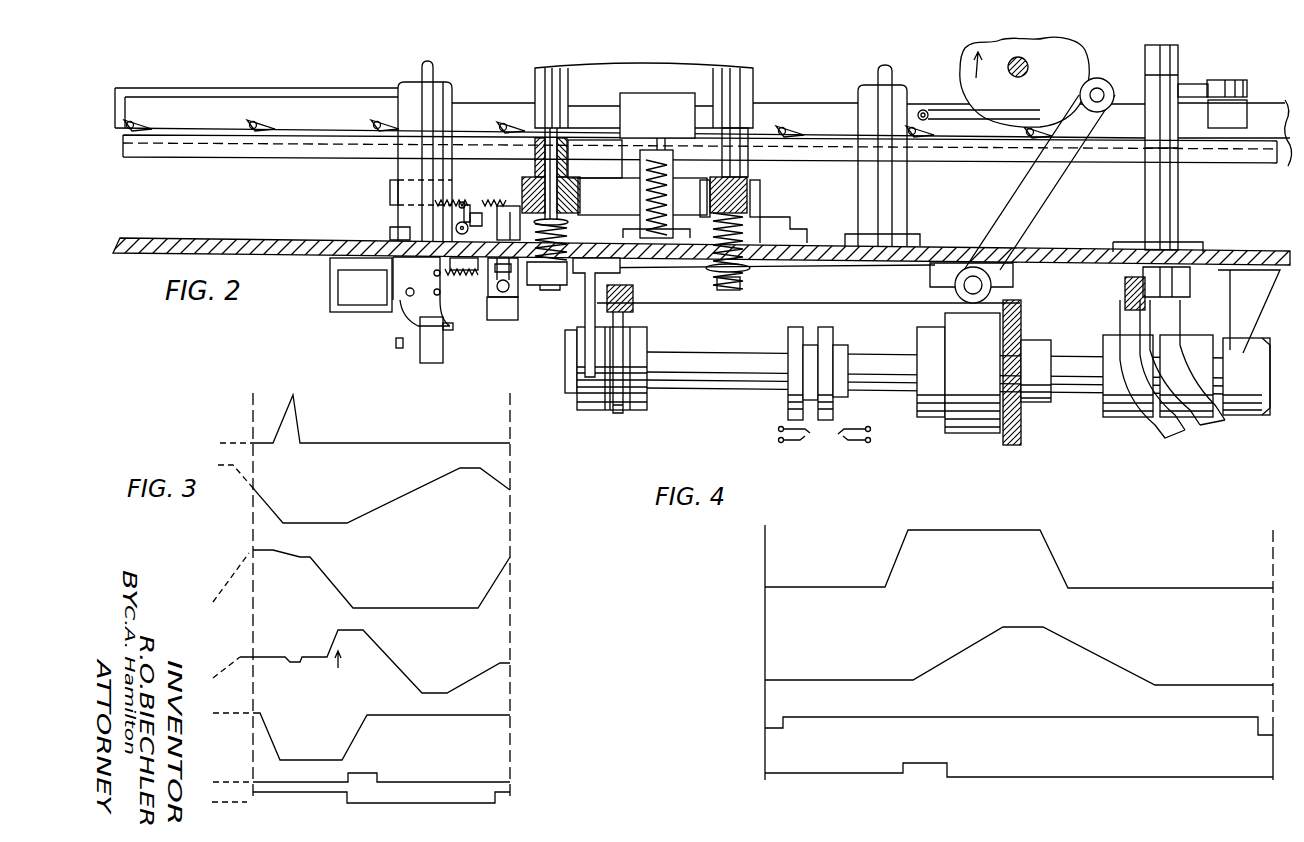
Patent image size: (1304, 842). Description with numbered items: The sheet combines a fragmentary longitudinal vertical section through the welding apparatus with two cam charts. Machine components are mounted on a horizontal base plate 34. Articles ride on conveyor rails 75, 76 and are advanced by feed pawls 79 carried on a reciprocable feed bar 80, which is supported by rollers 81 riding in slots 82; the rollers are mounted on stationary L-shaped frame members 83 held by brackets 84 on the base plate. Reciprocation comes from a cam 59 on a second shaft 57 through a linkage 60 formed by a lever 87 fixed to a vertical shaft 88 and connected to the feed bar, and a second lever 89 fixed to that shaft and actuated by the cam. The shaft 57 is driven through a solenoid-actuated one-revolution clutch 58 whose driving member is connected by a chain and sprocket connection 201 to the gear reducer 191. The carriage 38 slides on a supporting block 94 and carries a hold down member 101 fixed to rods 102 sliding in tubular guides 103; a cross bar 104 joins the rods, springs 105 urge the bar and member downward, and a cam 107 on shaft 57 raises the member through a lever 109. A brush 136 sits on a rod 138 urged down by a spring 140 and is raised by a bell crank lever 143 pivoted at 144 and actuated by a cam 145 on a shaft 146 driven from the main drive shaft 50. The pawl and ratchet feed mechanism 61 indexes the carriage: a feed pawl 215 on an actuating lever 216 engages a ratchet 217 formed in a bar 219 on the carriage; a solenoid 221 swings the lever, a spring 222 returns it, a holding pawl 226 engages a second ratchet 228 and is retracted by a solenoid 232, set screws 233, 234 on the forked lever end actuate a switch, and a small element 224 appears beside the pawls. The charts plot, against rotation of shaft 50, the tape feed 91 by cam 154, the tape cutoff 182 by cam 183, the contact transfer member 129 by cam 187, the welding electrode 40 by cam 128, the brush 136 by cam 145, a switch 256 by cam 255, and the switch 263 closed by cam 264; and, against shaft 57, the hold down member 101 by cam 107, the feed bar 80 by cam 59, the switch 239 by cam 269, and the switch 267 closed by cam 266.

In FIG. 2, the base plate 34 is at (918, 250).
In FIG. 2, the carriage 38 is at (771, 203).
In FIG. 3, the welding electrode 40 is at (448, 662).
In FIG. 3, the main drive shaft 50 is at (377, 817).
In FIG. 2, the second shaft 57 is at (726, 388).
In FIG. 4, the second shaft 57 is at (1015, 796).
In FIG. 2, the one-revolution clutch 58 is at (965, 420).
In FIG. 2, the cam 59 is at (1165, 442).
In FIG. 4, the cam 59 is at (1019, 649).
In FIG. 2, the linkage 60 is at (1236, 89).
In FIG. 2, the pawl and ratchet feed mechanism 61 is at (519, 324).
In FIG. 2, the rail 75 is at (163, 137).
In FIG. 2, the rail 76 is at (248, 146).
In FIG. 2, the feed pawls 79 is at (138, 124).
In FIG. 2, the feed bar 80 is at (335, 107).
In FIG. 4, the feed bar 80 is at (1018, 668).
In FIG. 2, the rollers 81 is at (925, 109).
In FIG. 2, the slots 82 is at (984, 106).
In FIG. 2, the L-shaped frame members 83 is at (172, 80).
In FIG. 2, the brackets 84 is at (447, 96).
In FIG. 2, the lever 87 is at (1195, 85).
In FIG. 2, the vertical shaft 88 is at (1178, 213).
In FIG. 2, the second lever 89 is at (1126, 294).
In FIG. 3, the tape feed 91 is at (354, 420).
In FIG. 2, the supporting block 94 is at (800, 236).
In FIG. 2, the hold down member 101 is at (596, 317).
In FIG. 4, the hold down member 101 is at (970, 566).
In FIG. 2, the rods 102 is at (765, 112).
In FIG. 2, the tubular guides 103 is at (535, 165).
In FIG. 2, the cross bar 104 is at (556, 286).
In FIG. 2, the springs 105 is at (570, 224).
In FIG. 2, the cam 107 is at (627, 411).
In FIG. 4, the cam 107 is at (1019, 547).
In FIG. 2, the lever 109 is at (640, 306).
In FIG. 3, the welding cam 128 is at (361, 661).
In FIG. 3, the contact transfer member 129 is at (405, 586).
In FIG. 3, the brush 136 is at (427, 730).
In FIG. 2, the rod 138 is at (650, 142).
In FIG. 2, the spring 140 is at (652, 204).
In FIG. 2, the bell crank lever 143 is at (1045, 190).
In FIG. 2, the pivot 144 is at (995, 289).
In FIG. 2, the cam 145 is at (1090, 60).
In FIG. 3, the cam 145 is at (361, 730).
In FIG. 2, the shaft 146 is at (1030, 70).
In FIG. 3, the tape feed cam 154 is at (365, 427).
In FIG. 2, the tape cutoff 182 is at (551, 176).
In FIG. 3, the tape cutoff 182 is at (430, 528).
In FIG. 3, the tape cutoff cam 183 is at (364, 494).
In FIG. 3, the contact transfer cam 187 is at (361, 579).
In FIG. 2, the gear reducer 191 is at (620, 80).
In FIG. 2, the chain and sprocket connection 201 is at (1021, 437).
In FIG. 2, the feed pawl 215 is at (398, 218).
In FIG. 2, the actuating lever 216 is at (432, 263).
In FIG. 2, the ratchet 217 is at (458, 196).
In FIG. 2, the bar 219 is at (392, 190).
In FIG. 2, the solenoid 221 is at (352, 300).
In FIG. 2, the spring 222 is at (452, 275).
In FIG. 2, the roller 224 is at (475, 231).
In FIG. 2, the holding pawl 226 is at (475, 214).
In FIG. 2, the ratchet 228 is at (501, 213).
In FIG. 2, the solenoid 232 is at (519, 314).
In FIG. 2, the set screw 233 is at (399, 348).
In FIG. 2, the set screw 234 is at (458, 327).
In FIG. 2, the switch 239 is at (838, 441).
In FIG. 4, the switch 239 is at (925, 730).
In FIG. 3, the cam 255 is at (361, 776).
In FIG. 3, the switch 256 is at (440, 778).
In FIG. 3, the switch 263 is at (422, 802).
In FIG. 3, the cam 264 is at (361, 796).
In FIG. 2, the cam 266 is at (788, 408).
In FIG. 4, the cam 266 is at (1019, 768).
In FIG. 2, the switch 267 is at (780, 443).
In FIG. 4, the switch 267 is at (1105, 770).
In FIG. 2, the cam 269 is at (835, 410).
In FIG. 4, the cam 269 is at (1019, 728).